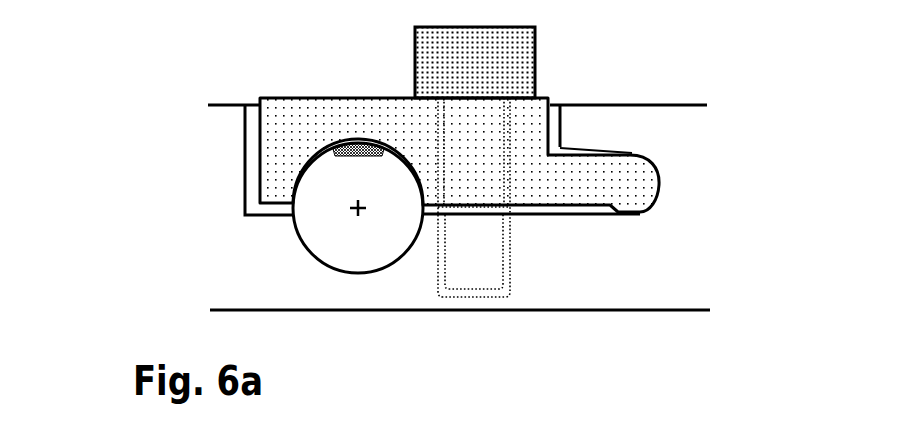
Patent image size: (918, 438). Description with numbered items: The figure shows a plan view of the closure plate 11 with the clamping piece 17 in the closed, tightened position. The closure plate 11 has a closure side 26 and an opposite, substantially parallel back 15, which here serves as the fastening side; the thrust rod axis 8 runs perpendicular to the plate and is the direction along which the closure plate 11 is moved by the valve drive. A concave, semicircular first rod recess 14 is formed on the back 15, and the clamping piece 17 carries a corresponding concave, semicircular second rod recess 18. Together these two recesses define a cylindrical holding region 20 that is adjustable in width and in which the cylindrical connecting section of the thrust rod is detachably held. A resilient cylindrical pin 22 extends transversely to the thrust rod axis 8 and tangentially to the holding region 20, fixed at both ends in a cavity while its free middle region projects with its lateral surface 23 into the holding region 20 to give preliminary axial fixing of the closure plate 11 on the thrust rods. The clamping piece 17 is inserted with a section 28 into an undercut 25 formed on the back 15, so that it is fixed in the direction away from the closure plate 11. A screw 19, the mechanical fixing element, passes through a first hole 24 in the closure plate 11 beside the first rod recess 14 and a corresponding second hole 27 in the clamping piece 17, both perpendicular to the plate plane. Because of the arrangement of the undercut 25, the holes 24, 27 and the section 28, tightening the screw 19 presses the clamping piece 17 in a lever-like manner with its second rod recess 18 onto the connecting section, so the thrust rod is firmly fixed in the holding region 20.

The thrust rod axis 8 is at (347, 208).
The closure plate 11 is at (265, 245).
The first rod recess 14 is at (313, 259).
The back 15 is at (700, 93).
The clamping piece 17 is at (317, 107).
The second rod recess 18 is at (297, 173).
The screw 19 is at (438, 54).
The cylindrical holding region 20 is at (335, 196).
The resilient cylindrical pin 22 is at (340, 147).
The lateral surface 23 is at (375, 158).
The first hole 24 is at (511, 265).
The undercut 25 is at (582, 147).
The closure side 26 is at (700, 315).
The second hole 27 is at (520, 130).
The section 28 is at (577, 180).